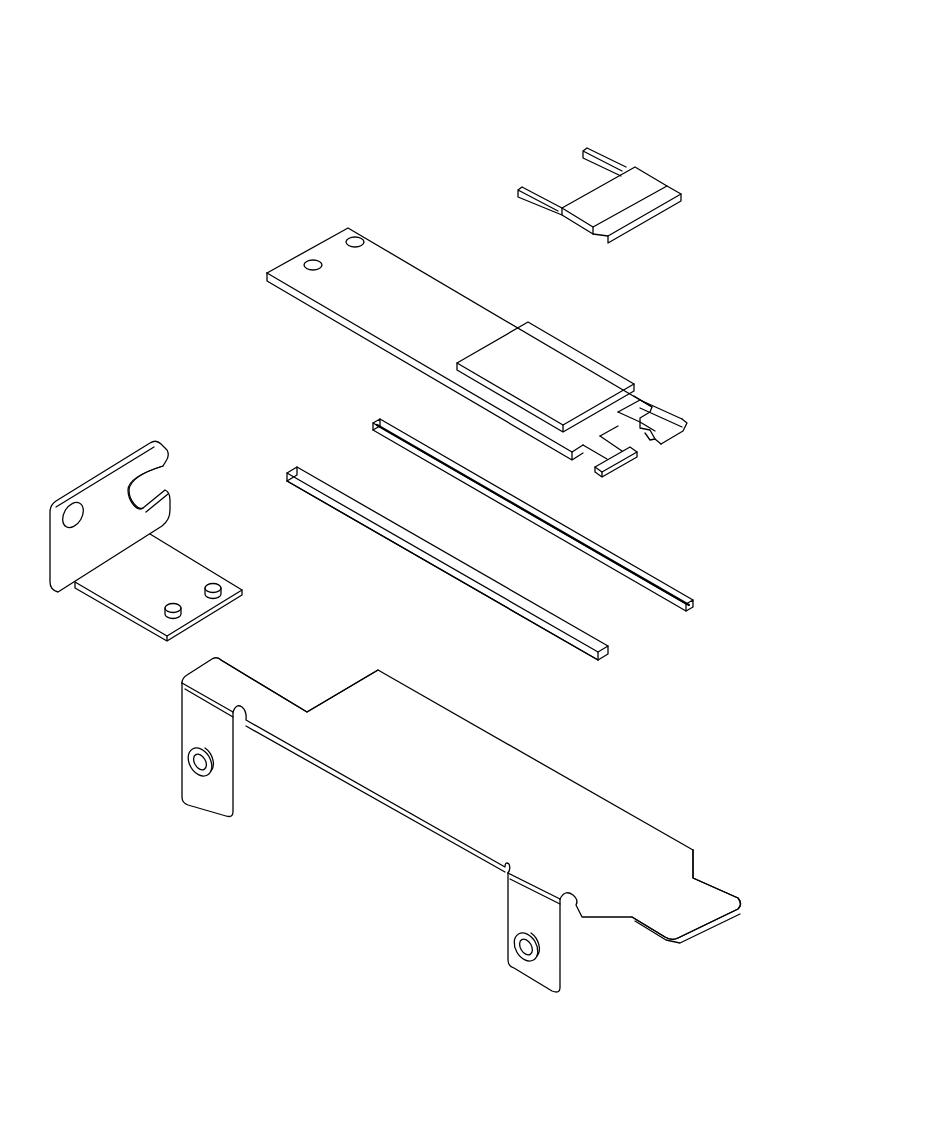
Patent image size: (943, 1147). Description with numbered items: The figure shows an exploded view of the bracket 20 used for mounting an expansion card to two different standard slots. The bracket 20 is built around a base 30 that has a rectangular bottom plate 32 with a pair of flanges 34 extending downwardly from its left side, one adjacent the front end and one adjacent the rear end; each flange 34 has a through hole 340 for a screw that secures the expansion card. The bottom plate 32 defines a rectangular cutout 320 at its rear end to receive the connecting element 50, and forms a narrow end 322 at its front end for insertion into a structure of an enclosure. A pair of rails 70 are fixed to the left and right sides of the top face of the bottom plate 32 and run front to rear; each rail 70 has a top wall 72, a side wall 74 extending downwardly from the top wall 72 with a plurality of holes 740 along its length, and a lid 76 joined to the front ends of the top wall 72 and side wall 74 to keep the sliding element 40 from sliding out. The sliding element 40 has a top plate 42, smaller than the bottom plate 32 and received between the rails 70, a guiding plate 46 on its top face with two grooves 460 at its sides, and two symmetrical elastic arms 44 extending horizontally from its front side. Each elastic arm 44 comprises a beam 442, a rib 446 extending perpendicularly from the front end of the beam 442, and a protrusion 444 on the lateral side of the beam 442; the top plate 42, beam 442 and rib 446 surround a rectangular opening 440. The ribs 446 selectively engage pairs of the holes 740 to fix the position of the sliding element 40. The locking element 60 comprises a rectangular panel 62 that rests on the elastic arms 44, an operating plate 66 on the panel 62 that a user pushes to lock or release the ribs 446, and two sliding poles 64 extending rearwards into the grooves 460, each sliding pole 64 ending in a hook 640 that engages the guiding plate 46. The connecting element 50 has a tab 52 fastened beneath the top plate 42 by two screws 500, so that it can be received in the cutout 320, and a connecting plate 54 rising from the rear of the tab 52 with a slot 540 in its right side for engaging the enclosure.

The bracket 20 is at (147, 53).
The base 30 is at (335, 832).
The bottom plate 32 is at (507, 768).
The cutout 320 is at (298, 667).
The narrow end 322 is at (690, 912).
The flange 34 is at (217, 787).
The through hole 340 is at (195, 757).
The sliding element 40 is at (580, 323).
The top plate 42 is at (337, 298).
The elastic arm 44 is at (758, 437).
The rectangular opening 440 is at (665, 413).
The beam 442 is at (667, 432).
The protrusion 444 is at (650, 450).
The rib 446 is at (685, 432).
The guiding plate 46 is at (572, 368).
The groove 460 is at (633, 393).
The connecting element 50 is at (101, 440).
The tab 52 is at (120, 592).
The connecting plate 54 is at (100, 493).
The slot 540 is at (147, 485).
The screw 500 is at (213, 583).
The locking element 60 is at (660, 170).
The panel 62 is at (643, 213).
The sliding pole 64 is at (532, 203).
The hook 640 is at (583, 155).
The operating plate 66 is at (587, 213).
The rail 70 is at (668, 570).
The top wall 72 is at (580, 642).
The side wall 74 is at (545, 630).
The hole 740 is at (593, 560).
The lid 76 is at (691, 610).